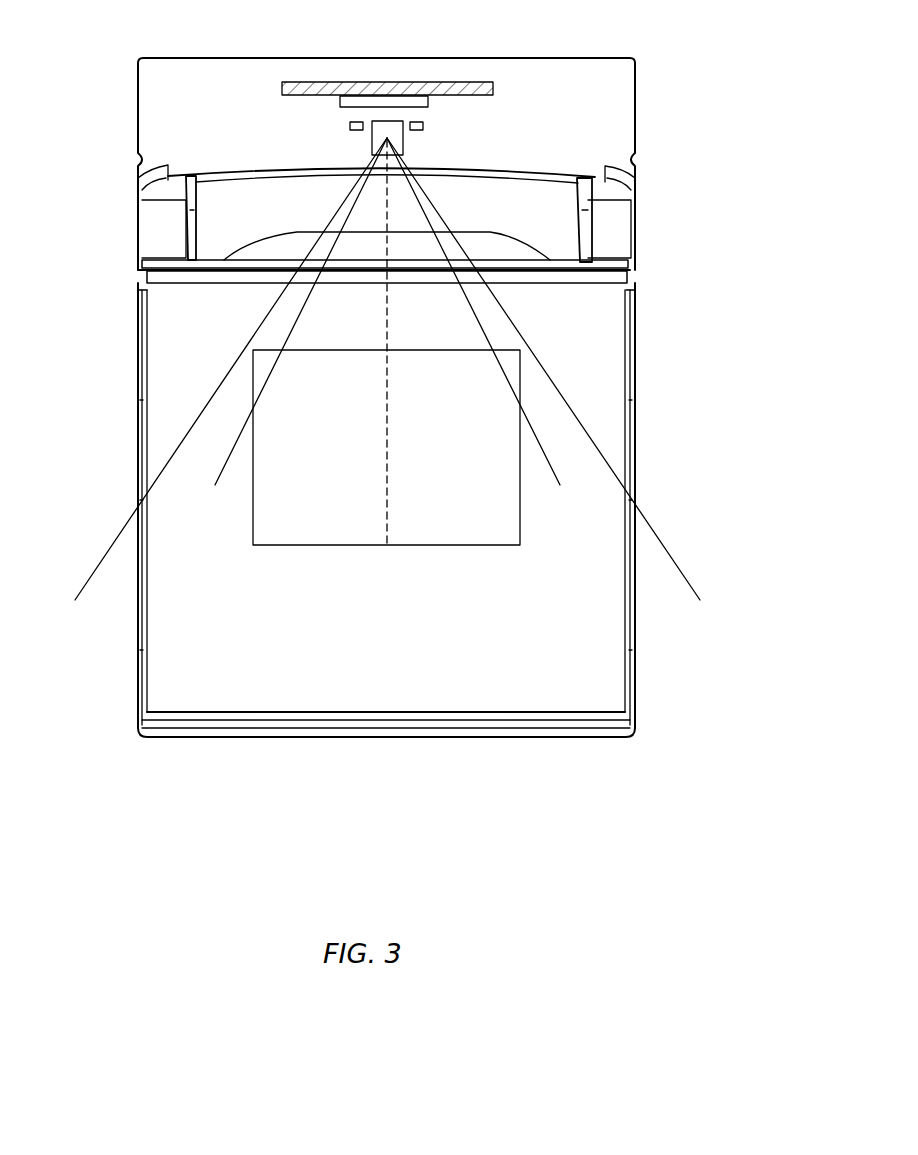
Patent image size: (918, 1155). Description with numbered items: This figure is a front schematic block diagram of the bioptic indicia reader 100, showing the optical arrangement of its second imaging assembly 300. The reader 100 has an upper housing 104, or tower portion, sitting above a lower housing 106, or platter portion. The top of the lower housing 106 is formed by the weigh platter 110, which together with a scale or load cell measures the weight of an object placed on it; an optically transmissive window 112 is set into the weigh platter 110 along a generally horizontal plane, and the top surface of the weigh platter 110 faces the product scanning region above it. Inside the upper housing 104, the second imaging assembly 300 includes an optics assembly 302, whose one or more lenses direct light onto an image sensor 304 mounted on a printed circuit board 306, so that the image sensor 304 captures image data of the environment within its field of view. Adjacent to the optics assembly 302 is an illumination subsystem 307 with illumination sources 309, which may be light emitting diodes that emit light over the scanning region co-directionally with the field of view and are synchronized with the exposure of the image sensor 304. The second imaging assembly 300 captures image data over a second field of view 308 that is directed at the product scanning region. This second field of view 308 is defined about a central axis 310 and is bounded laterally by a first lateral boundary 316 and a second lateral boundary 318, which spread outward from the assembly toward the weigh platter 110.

The bioptic indicia reader 100 is at (682, 139).
The upper housing 104 is at (552, 58).
The lower housing 106 is at (633, 660).
The weigh platter 110 is at (571, 665).
The optically transmissive window 112 is at (470, 458).
The second imaging assembly 300 is at (262, 128).
The optics assembly 302 is at (403, 143).
The image sensor 304 is at (428, 100).
The printed circuit board 306 is at (385, 82).
The illumination subsystem 307 is at (335, 124).
The second field of view (SFOV) 308 is at (232, 367).
The illumination sources 309 is at (352, 130).
The SFOV central axis 310 is at (385, 333).
The first SFOV lateral boundary 316 is at (258, 330).
The second SFOV lateral boundary 318 is at (518, 332).